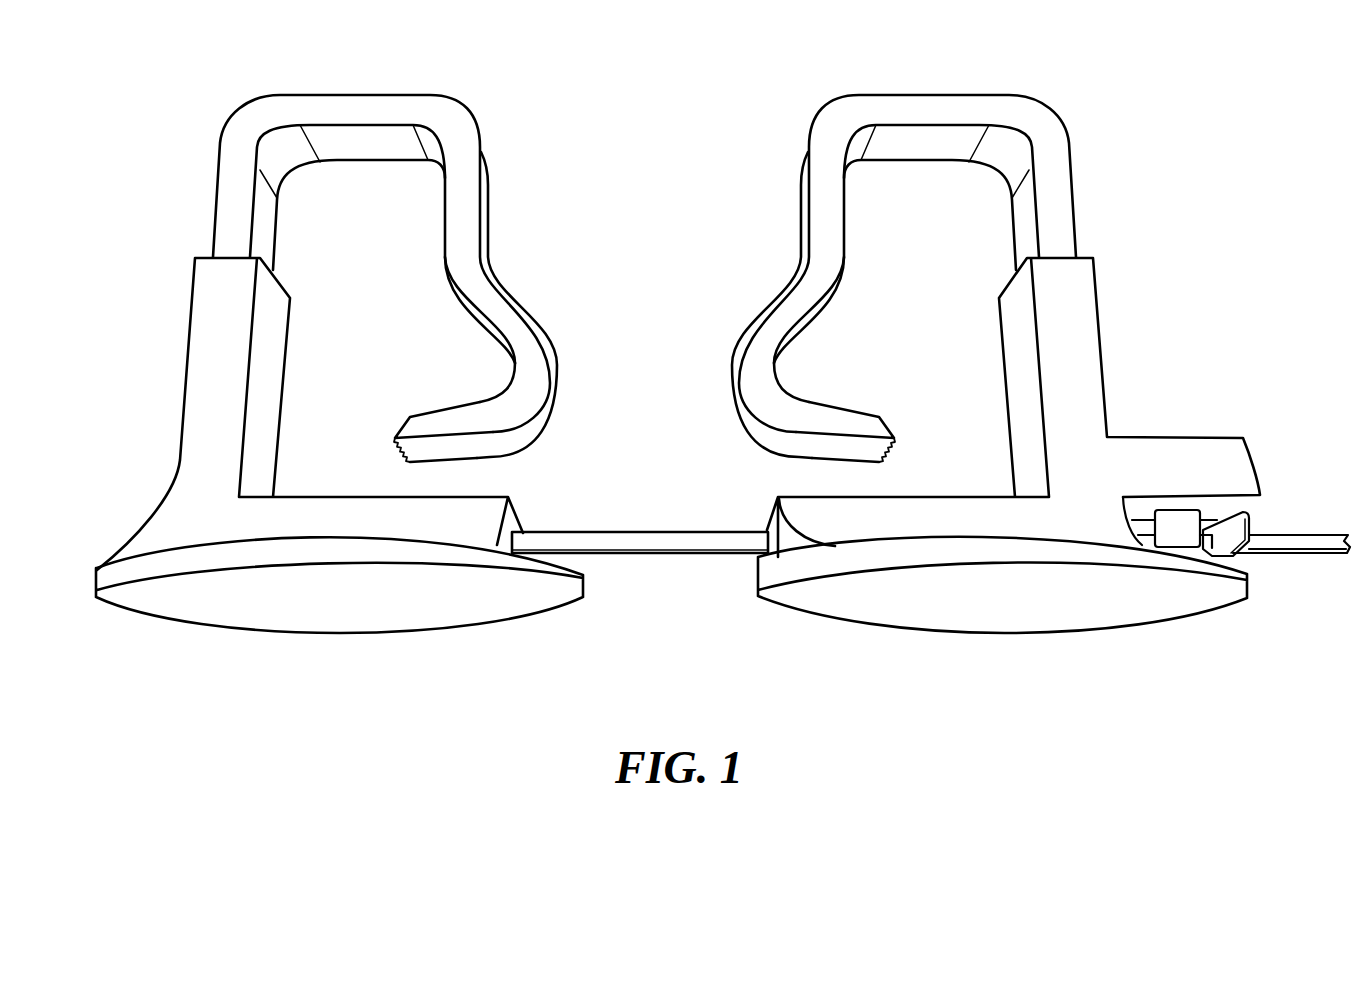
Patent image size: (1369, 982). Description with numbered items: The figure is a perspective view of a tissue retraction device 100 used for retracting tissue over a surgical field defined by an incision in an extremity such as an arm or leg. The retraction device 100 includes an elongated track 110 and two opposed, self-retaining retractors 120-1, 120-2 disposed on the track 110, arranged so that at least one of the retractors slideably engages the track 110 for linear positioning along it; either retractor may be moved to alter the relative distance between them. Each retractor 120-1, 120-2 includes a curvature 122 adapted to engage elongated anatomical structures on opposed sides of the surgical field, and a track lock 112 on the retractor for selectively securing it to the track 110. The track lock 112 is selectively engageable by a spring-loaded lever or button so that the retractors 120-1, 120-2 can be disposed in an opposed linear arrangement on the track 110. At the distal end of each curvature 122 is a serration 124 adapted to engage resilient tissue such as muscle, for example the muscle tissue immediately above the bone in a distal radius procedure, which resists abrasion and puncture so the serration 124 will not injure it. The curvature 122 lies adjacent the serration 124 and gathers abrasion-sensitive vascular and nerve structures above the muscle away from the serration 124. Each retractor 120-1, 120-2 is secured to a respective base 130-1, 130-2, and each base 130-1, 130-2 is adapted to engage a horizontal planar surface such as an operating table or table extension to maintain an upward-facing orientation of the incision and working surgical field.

The tissue retraction device 100 is at (630, 110).
The elongated track 110 is at (655, 542).
The track lock 112 is at (1240, 523).
The self-retaining retractor 120-1 is at (218, 310).
The self-retaining retractor 120-2 is at (1080, 320).
The curvature 122 is at (733, 375).
The serration 124 is at (412, 418).
The base 130-1 is at (325, 595).
The base 130-2 is at (987, 592).